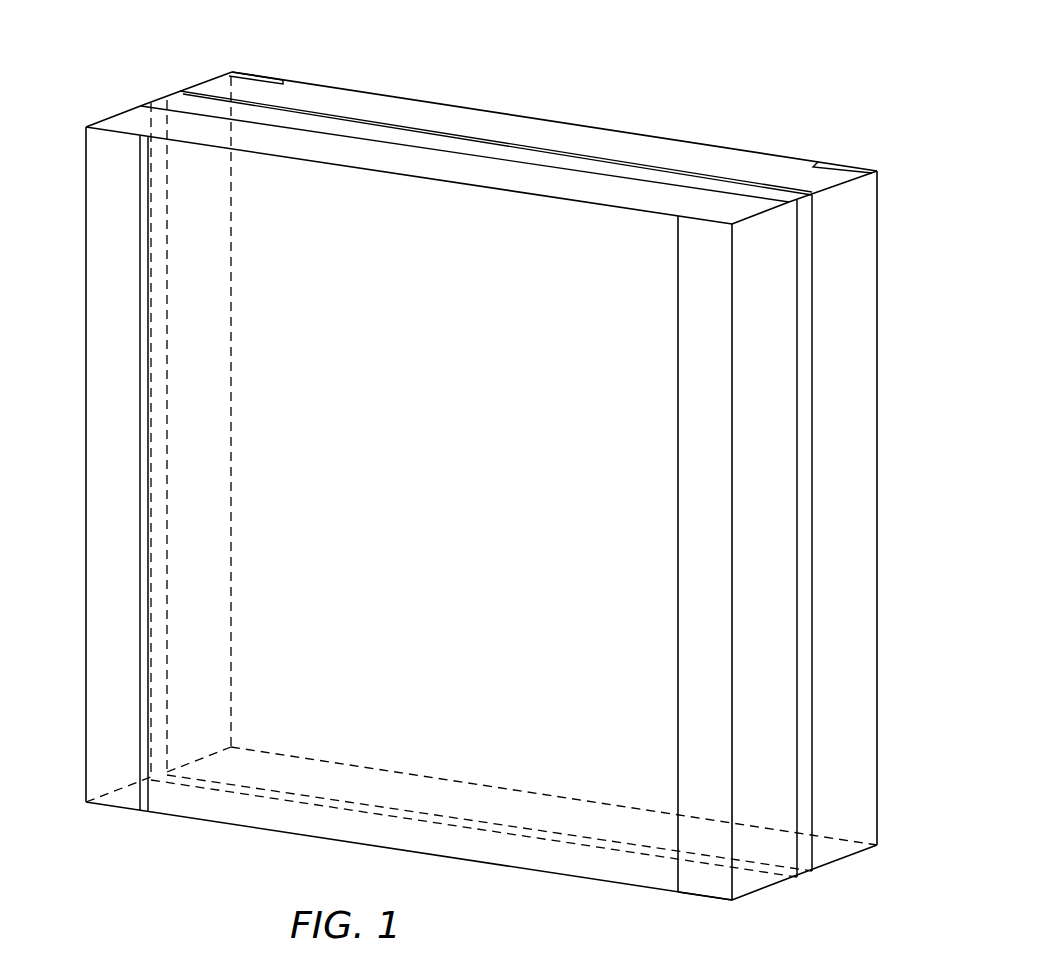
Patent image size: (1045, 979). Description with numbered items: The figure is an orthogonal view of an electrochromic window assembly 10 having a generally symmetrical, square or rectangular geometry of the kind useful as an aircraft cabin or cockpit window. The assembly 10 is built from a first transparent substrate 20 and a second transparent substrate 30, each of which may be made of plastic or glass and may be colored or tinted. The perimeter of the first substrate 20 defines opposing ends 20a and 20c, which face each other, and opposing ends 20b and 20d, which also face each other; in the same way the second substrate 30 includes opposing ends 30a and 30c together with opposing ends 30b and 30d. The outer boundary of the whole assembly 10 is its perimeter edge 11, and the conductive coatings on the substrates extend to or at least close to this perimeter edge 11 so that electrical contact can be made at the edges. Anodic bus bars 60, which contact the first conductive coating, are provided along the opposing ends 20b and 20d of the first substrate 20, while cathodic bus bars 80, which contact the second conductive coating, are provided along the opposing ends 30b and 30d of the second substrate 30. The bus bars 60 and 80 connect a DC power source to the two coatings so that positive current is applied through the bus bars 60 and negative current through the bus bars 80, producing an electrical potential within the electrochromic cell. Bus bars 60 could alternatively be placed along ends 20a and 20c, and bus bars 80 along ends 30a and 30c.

The electrochromic window assembly 10 is at (748, 92).
The perimeter edge 11 is at (686, 137).
The first transparent substrate 20 is at (213, 147).
The end of first substrate 20a is at (323, 150).
The end of first substrate 20b is at (115, 116).
The end of first substrate 20c is at (295, 819).
The end of first substrate 20d is at (775, 350).
The second transparent substrate 30 is at (507, 115).
The end of second substrate 30a is at (700, 158).
The end of second substrate 30b is at (203, 627).
The end of second substrate 30c is at (613, 827).
The end of second substrate 30d is at (855, 540).
The anodic bus bar 60 is at (100, 421).
The cathodic bus bar 80 is at (262, 74).